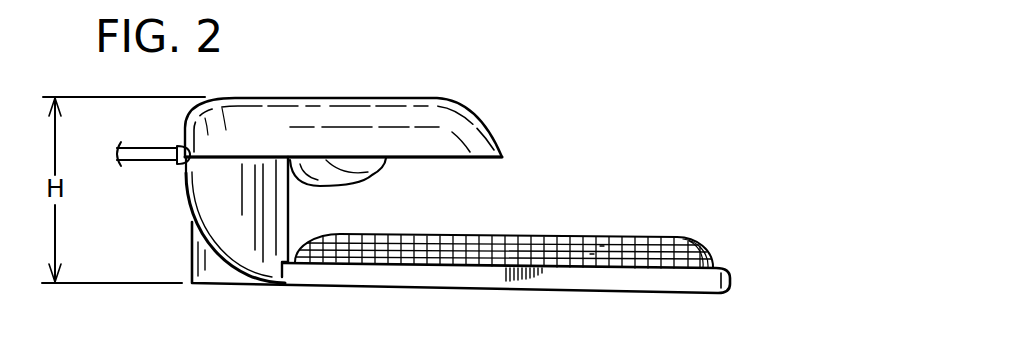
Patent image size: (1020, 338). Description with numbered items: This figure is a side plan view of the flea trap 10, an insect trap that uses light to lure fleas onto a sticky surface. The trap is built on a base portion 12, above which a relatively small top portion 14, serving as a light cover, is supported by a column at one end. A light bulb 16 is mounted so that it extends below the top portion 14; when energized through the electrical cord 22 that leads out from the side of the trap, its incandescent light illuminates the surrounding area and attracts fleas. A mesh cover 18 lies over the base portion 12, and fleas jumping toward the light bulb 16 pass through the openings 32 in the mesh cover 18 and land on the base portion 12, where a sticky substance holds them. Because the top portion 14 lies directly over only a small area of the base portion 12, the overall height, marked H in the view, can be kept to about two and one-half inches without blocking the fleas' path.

The flea trap 10 is at (500, 102).
The base portion 12 is at (737, 283).
The top portion 14 is at (498, 140).
The light bulb 16 is at (360, 178).
The mesh cover 18 is at (528, 237).
The electrical cord 22 is at (140, 160).
The openings 32 is at (612, 260).